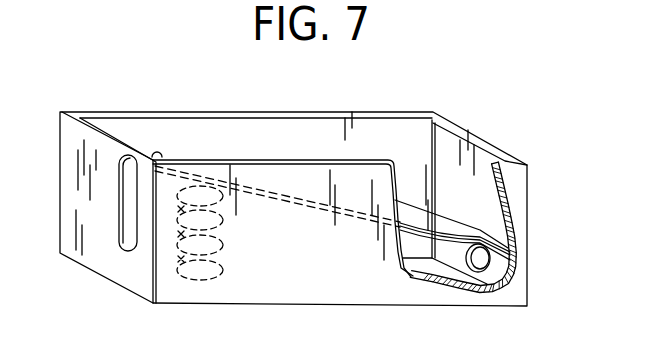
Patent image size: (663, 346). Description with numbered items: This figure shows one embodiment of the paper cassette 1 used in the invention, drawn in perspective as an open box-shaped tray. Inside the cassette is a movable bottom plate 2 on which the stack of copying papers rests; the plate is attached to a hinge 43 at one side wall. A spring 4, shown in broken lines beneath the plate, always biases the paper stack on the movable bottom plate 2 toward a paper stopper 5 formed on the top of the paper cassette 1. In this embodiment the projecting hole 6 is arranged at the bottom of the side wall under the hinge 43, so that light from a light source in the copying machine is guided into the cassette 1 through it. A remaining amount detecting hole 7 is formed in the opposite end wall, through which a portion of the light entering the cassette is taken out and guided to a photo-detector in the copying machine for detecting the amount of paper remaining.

The paper cassette 1 is at (518, 178).
The movable bottom plate 2 is at (440, 222).
The spring 4 is at (226, 270).
The paper stopper 5 is at (158, 151).
The projecting hole 6 is at (490, 262).
The remaining amount detecting hole 7 is at (122, 252).
The hinge 43 is at (478, 233).